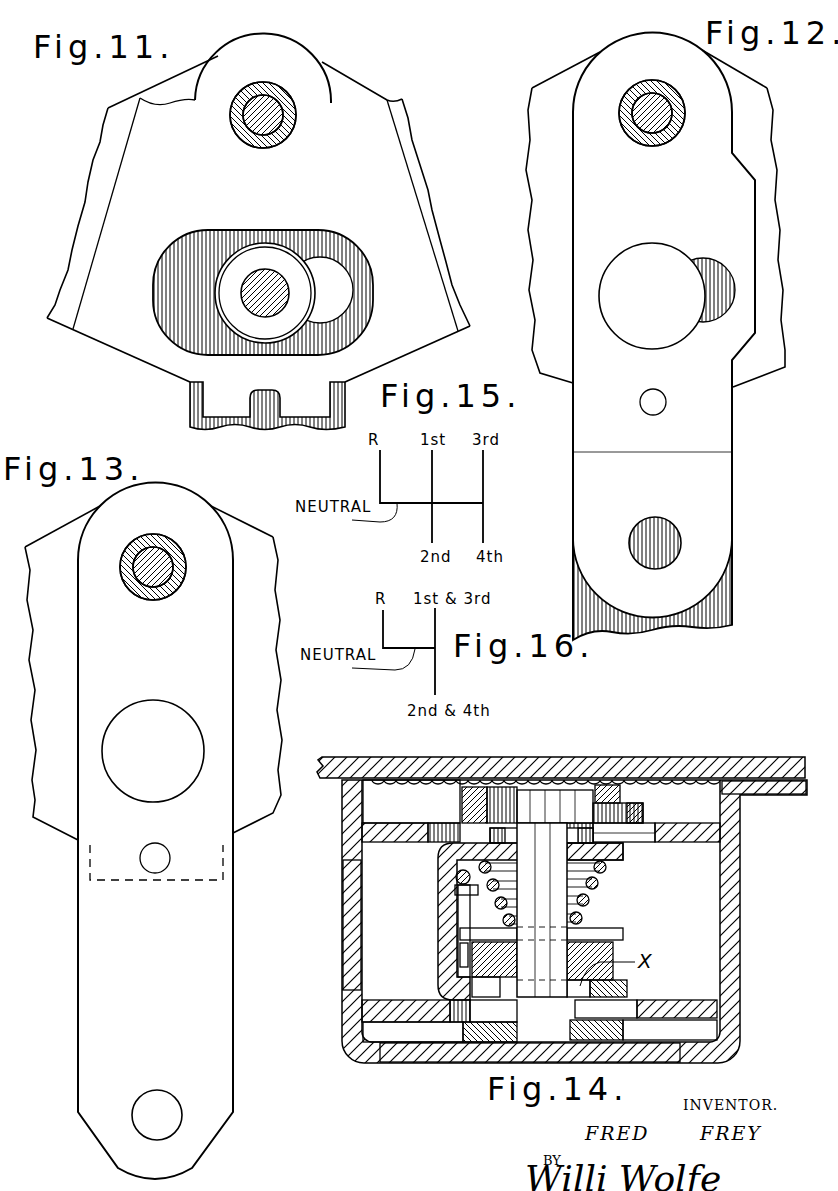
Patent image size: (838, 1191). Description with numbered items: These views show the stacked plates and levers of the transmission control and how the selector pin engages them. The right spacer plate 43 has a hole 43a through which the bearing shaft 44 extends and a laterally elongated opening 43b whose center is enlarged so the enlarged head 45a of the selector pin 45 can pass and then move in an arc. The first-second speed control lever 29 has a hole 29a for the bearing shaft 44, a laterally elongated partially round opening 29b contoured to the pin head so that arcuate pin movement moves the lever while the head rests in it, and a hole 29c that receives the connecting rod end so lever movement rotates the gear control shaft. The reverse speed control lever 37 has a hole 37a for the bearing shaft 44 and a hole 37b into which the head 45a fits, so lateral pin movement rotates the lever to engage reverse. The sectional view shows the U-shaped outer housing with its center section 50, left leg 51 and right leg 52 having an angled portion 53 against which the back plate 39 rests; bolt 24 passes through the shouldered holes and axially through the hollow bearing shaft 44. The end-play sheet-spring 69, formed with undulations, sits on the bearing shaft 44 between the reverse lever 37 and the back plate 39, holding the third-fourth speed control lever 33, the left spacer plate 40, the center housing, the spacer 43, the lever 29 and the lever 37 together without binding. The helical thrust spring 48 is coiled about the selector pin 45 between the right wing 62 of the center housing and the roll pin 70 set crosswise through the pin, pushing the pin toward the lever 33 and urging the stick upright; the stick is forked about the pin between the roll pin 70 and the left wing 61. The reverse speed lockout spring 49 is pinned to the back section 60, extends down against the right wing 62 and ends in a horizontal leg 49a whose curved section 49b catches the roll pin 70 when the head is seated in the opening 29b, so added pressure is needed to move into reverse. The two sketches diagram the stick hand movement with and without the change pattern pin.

In FIG. 11, the bolt 24 is at (236, 120).
In FIG. 12, the bolt 24 is at (629, 136).
In FIG. 13, the bolt 24 is at (163, 585).
In FIG. 12, the first-second speed control lever 29 is at (718, 418).
In FIG. 14, the first-second speed control lever 29 is at (465, 816).
In FIG. 12, the hole 29a is at (630, 90).
In FIG. 12, the opening 29b is at (652, 244).
In FIG. 12, the hole 29c is at (668, 560).
In FIG. 14, the third-fourth speed control lever 33 is at (633, 1035).
In FIG. 13, the reverse speed control lever 37 is at (220, 915).
In FIG. 14, the reverse speed control lever 37 is at (620, 794).
In FIG. 13, the hole 37a is at (148, 536).
In FIG. 13, the hole 37b is at (152, 702).
In FIG. 14, the back plate 39 is at (625, 757).
In FIG. 14, the left spacer plate 40 is at (708, 1008).
In FIG. 11, the right spacer plate 43 is at (397, 148).
In FIG. 14, the right spacer plate 43 is at (668, 833).
In FIG. 11, the hole 43a is at (277, 83).
In FIG. 11, the opening 43b is at (328, 237).
In FIG. 11, the bearing shaft 44 is at (281, 88).
In FIG. 12, the bearing shaft 44 is at (674, 110).
In FIG. 13, the bearing shaft 44 is at (183, 553).
In FIG. 11, the selector pin 45 is at (222, 297).
In FIG. 14, the selector pin 45 is at (550, 912).
In FIG. 11, the enlarged head 45a is at (300, 279).
In FIG. 14, the enlarged head 45a is at (593, 833).
In FIG. 14, the helical thrust spring 48 is at (606, 884).
In FIG. 14, the reverse speed lockout spring 49 is at (458, 872).
In FIG. 14, the horizontal leg 49a is at (458, 912).
In FIG. 14, the curved section 49b is at (460, 950).
In FIG. 14, the center section 50 is at (410, 1063).
In FIG. 14, the left leg 51 is at (343, 970).
In FIG. 14, the right leg 52 is at (741, 938).
In FIG. 14, the angled portion 53 is at (771, 813).
In FIG. 14, the back section 60 is at (438, 882).
In FIG. 14, the left wing 61 is at (628, 990).
In FIG. 14, the right wing 62 is at (625, 855).
In FIG. 14, the end-play sheet-spring 69 is at (385, 790).
In FIG. 14, the roll pin 70 is at (622, 935).